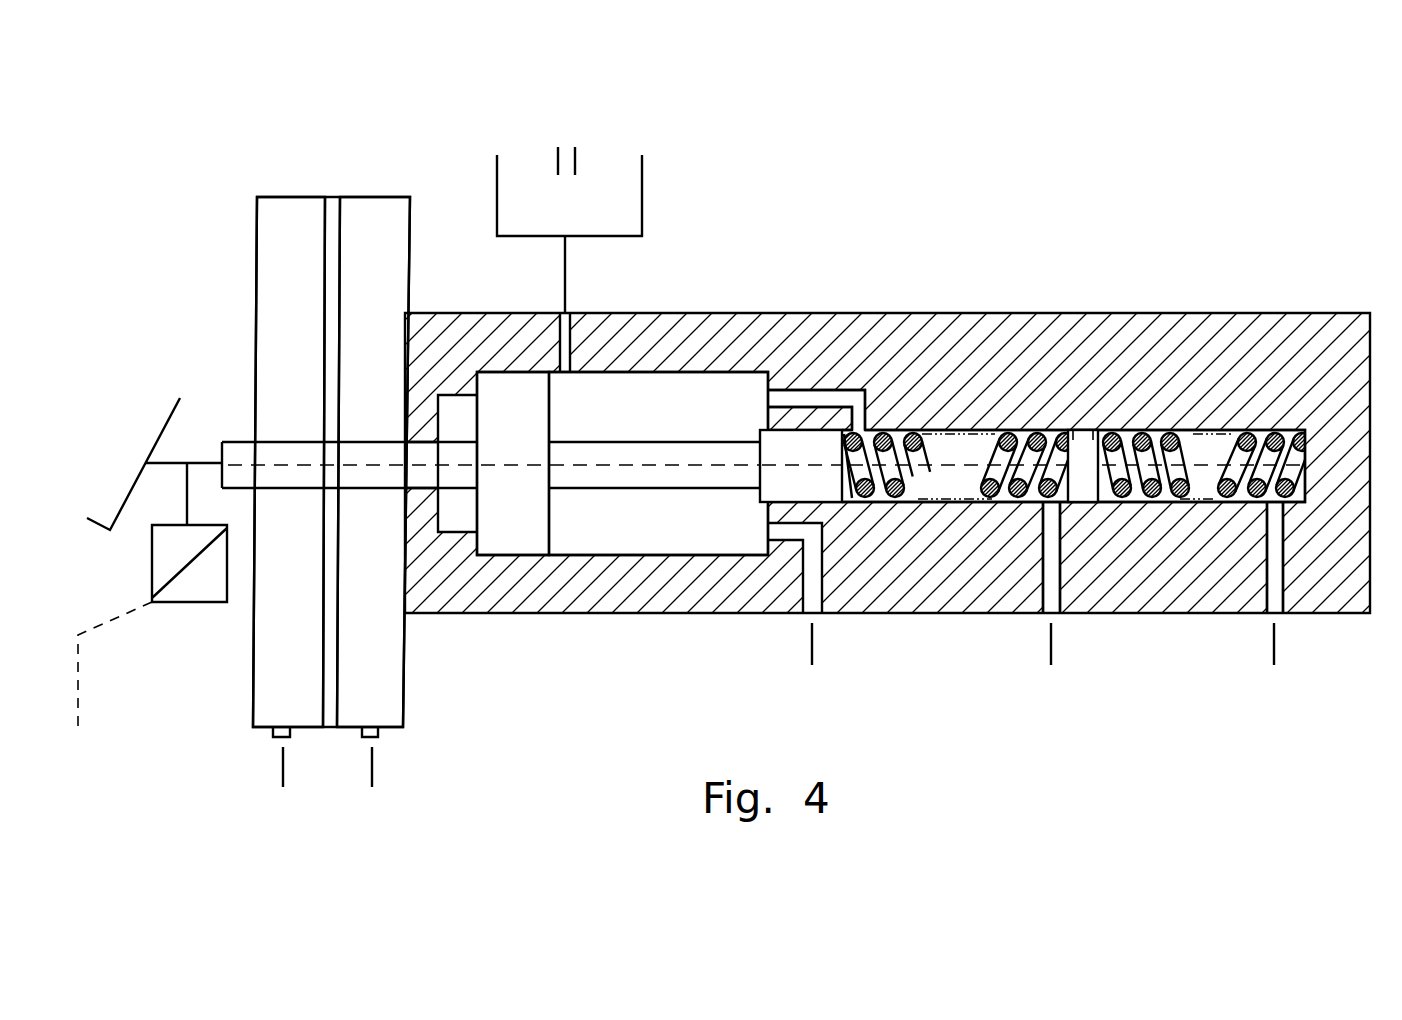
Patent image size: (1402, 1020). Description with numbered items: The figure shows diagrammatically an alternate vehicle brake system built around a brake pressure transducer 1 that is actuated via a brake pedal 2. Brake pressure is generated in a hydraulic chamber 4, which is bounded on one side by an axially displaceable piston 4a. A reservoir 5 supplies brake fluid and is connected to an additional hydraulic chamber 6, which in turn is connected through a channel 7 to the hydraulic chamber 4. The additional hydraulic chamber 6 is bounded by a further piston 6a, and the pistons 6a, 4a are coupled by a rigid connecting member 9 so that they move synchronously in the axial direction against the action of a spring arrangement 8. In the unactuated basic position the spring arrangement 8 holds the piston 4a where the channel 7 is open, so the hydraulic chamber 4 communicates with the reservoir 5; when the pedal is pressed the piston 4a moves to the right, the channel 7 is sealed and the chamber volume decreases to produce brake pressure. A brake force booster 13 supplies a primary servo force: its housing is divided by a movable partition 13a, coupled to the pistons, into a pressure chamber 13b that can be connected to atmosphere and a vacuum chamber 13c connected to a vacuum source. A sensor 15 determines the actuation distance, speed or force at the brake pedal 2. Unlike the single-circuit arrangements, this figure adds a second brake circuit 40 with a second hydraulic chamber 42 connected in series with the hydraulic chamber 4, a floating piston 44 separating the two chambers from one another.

The brake pressure transducer 1 is at (1157, 216).
The brake pedal 2 is at (172, 412).
The hydraulic chamber 4 is at (962, 478).
The piston 4a is at (787, 455).
The reservoir 5 is at (575, 223).
The additional hydraulic chamber 6 is at (630, 418).
The further piston 6a is at (515, 387).
The channel 7 is at (853, 387).
The spring arrangement 8 is at (1032, 430).
The rigid connecting member 9 is at (690, 463).
The brake force booster 13 is at (282, 196).
The movable partition 13a is at (333, 196).
The pressure chamber 13b is at (262, 287).
The vacuum chamber 13c is at (348, 287).
The sensor 15 is at (207, 588).
The second brake circuit 40 is at (1274, 340).
The second hydraulic chamber 42 is at (1185, 490).
The floating piston 44 is at (1088, 430).